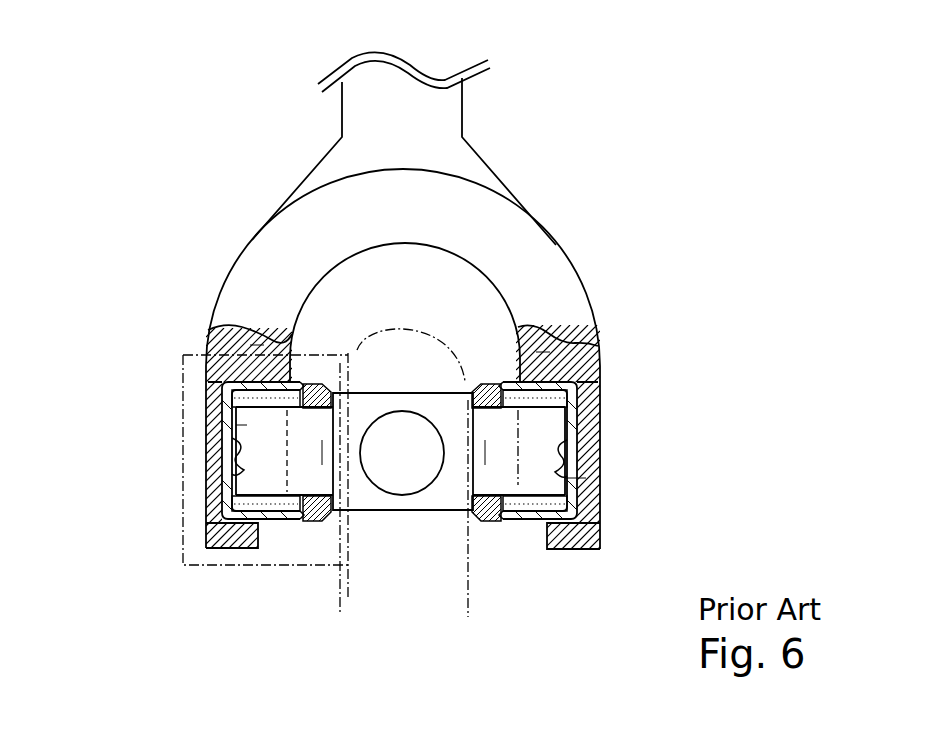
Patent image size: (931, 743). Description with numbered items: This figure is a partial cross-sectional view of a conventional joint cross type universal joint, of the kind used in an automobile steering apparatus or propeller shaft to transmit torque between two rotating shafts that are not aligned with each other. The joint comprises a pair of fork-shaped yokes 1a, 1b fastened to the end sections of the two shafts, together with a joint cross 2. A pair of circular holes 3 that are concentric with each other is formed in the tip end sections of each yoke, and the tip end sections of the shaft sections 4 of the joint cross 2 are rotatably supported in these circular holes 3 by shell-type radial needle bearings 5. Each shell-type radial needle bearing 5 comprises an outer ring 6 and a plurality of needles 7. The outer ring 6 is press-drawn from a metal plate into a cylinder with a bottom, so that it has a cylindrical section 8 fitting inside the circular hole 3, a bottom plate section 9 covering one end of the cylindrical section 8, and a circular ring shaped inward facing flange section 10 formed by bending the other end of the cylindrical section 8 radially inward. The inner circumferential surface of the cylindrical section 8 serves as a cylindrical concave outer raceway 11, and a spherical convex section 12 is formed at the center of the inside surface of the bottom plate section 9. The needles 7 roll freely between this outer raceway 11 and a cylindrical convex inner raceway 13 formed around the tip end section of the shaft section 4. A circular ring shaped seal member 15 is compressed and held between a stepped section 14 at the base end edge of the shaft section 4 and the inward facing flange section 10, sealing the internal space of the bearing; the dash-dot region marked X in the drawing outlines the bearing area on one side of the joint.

The yoke 1a is at (420, 118).
The yoke 1b is at (336, 624).
The joint cross 2 is at (435, 407).
The circular hole 3 is at (206, 523).
The shaft section 4 is at (397, 440).
The shell-type radial needle bearing 5 is at (214, 330).
The outer ring 6 is at (244, 335).
The needle 7 is at (230, 399).
The cylindrical section 8 is at (240, 546).
The bottom plate section 9 is at (247, 425).
The inward facing flange section 10 is at (300, 385).
The outer raceway 11 is at (257, 345).
The spherical convex section 12 is at (230, 468).
The inner raceway 13 is at (272, 496).
The stepped section 14 is at (328, 452).
The seal member 15 is at (294, 500).
The detail region X is at (183, 355).